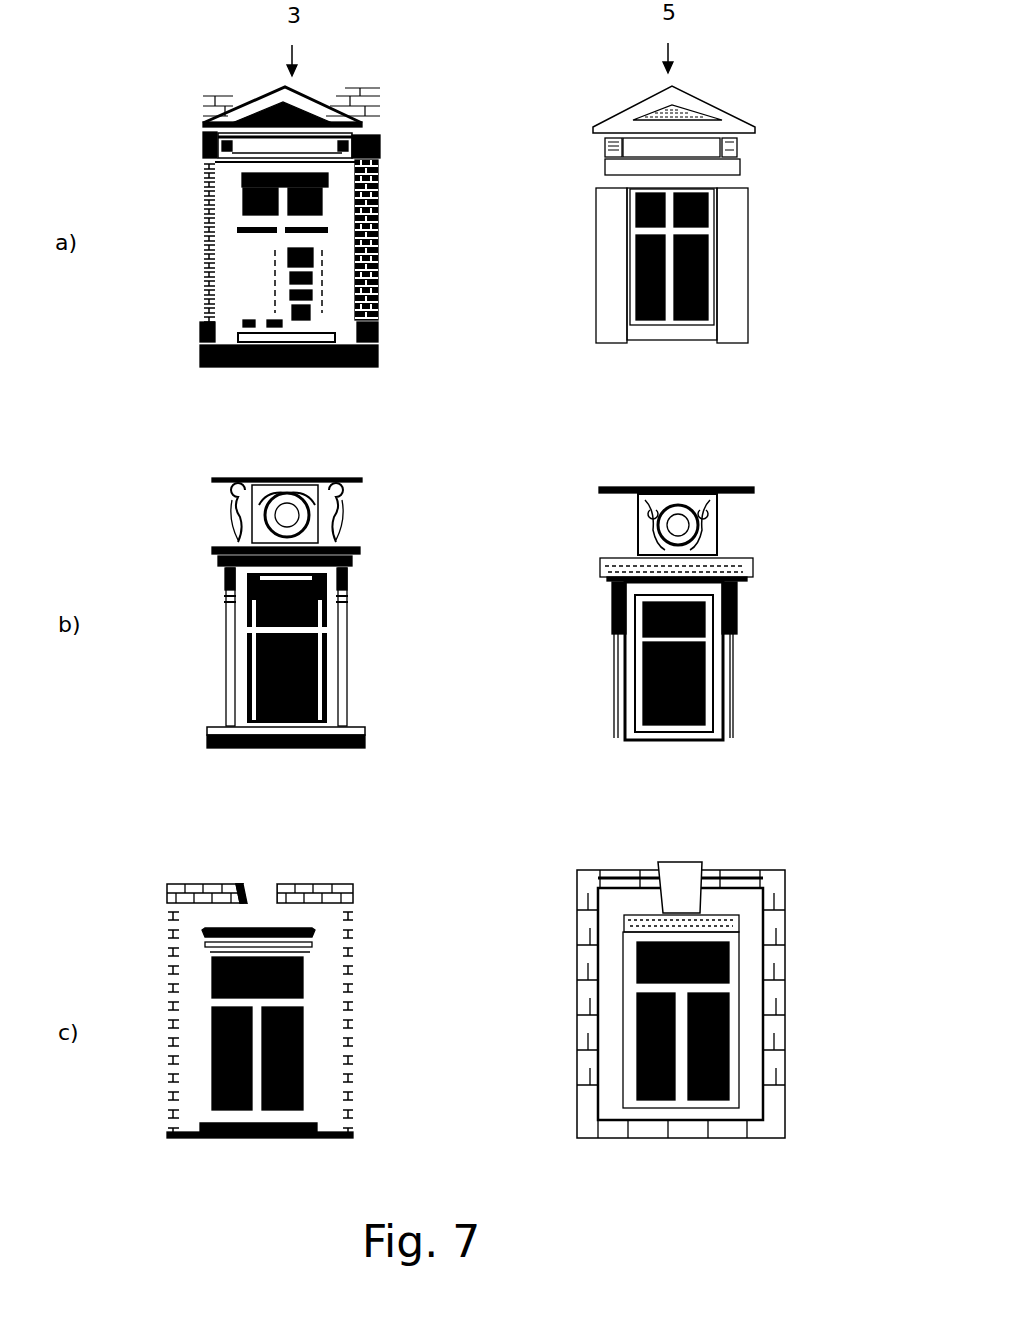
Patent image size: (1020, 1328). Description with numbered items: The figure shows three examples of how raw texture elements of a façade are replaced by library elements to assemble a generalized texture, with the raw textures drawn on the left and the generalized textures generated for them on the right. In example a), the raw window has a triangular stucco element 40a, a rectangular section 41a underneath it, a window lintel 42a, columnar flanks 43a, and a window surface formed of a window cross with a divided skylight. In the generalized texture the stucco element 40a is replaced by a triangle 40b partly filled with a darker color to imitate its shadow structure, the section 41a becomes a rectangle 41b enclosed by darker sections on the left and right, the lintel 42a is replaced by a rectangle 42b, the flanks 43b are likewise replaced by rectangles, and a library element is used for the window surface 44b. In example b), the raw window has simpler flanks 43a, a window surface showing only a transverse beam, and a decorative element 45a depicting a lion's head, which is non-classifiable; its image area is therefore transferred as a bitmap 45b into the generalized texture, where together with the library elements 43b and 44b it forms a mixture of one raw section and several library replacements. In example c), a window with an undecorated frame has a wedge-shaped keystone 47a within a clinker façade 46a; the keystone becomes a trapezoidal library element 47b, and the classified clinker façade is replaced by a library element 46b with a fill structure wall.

The triangular stucco element 40a is at (243, 110).
The rectangular section 41a is at (312, 147).
The window lintel 42a is at (320, 188).
The columnar flanks 43a is at (232, 315).
The decorative element 45a is at (283, 497).
The clinker façade 46a is at (352, 943).
The wedge-shaped keystone 47a is at (265, 882).
The triangle 40b is at (625, 115).
The rectangle 41b is at (708, 145).
The rectangle replacing window lintel 42b is at (703, 165).
The flanks 43b is at (622, 273).
The window surface 44b is at (633, 217).
The bitmap 45b is at (673, 503).
The library element with fill structure wall 46b is at (585, 1012).
The library element in the form of a trapezoid 47b is at (682, 868).